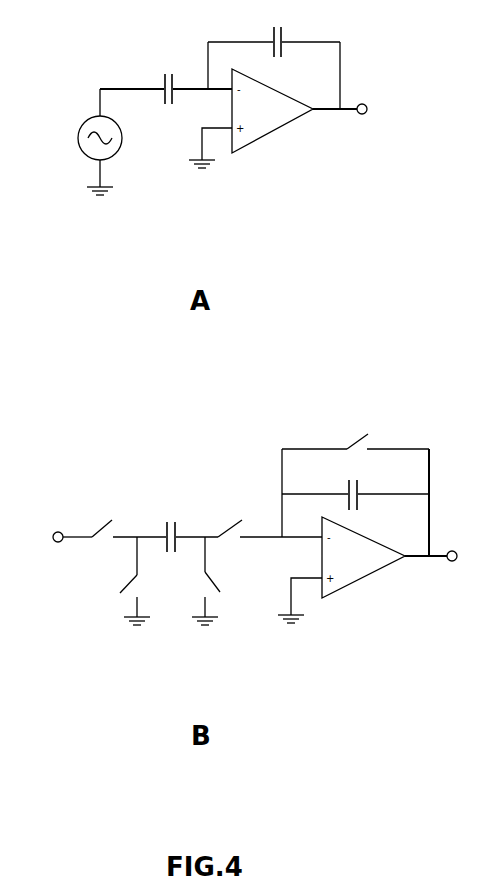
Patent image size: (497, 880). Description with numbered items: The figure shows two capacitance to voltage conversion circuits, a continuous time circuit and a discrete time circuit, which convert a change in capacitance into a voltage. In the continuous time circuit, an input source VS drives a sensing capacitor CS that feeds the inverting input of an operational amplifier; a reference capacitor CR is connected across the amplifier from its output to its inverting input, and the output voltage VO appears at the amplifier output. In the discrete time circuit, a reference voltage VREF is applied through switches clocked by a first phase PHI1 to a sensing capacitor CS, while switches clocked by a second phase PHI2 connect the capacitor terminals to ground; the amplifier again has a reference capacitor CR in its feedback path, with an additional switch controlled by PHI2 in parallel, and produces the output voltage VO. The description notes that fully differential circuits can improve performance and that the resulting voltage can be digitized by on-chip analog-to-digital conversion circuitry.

The input voltage source VS is at (87, 142).
The sampling capacitor CS is at (166, 310).
The feedback (reference) capacitor CR is at (318, 265).
The output voltage VO is at (393, 333).
The reference voltage VREF is at (55, 537).
The phase 1 switch PHI1 is at (207, 519).
The phase 2 switch PHI2 is at (260, 527).